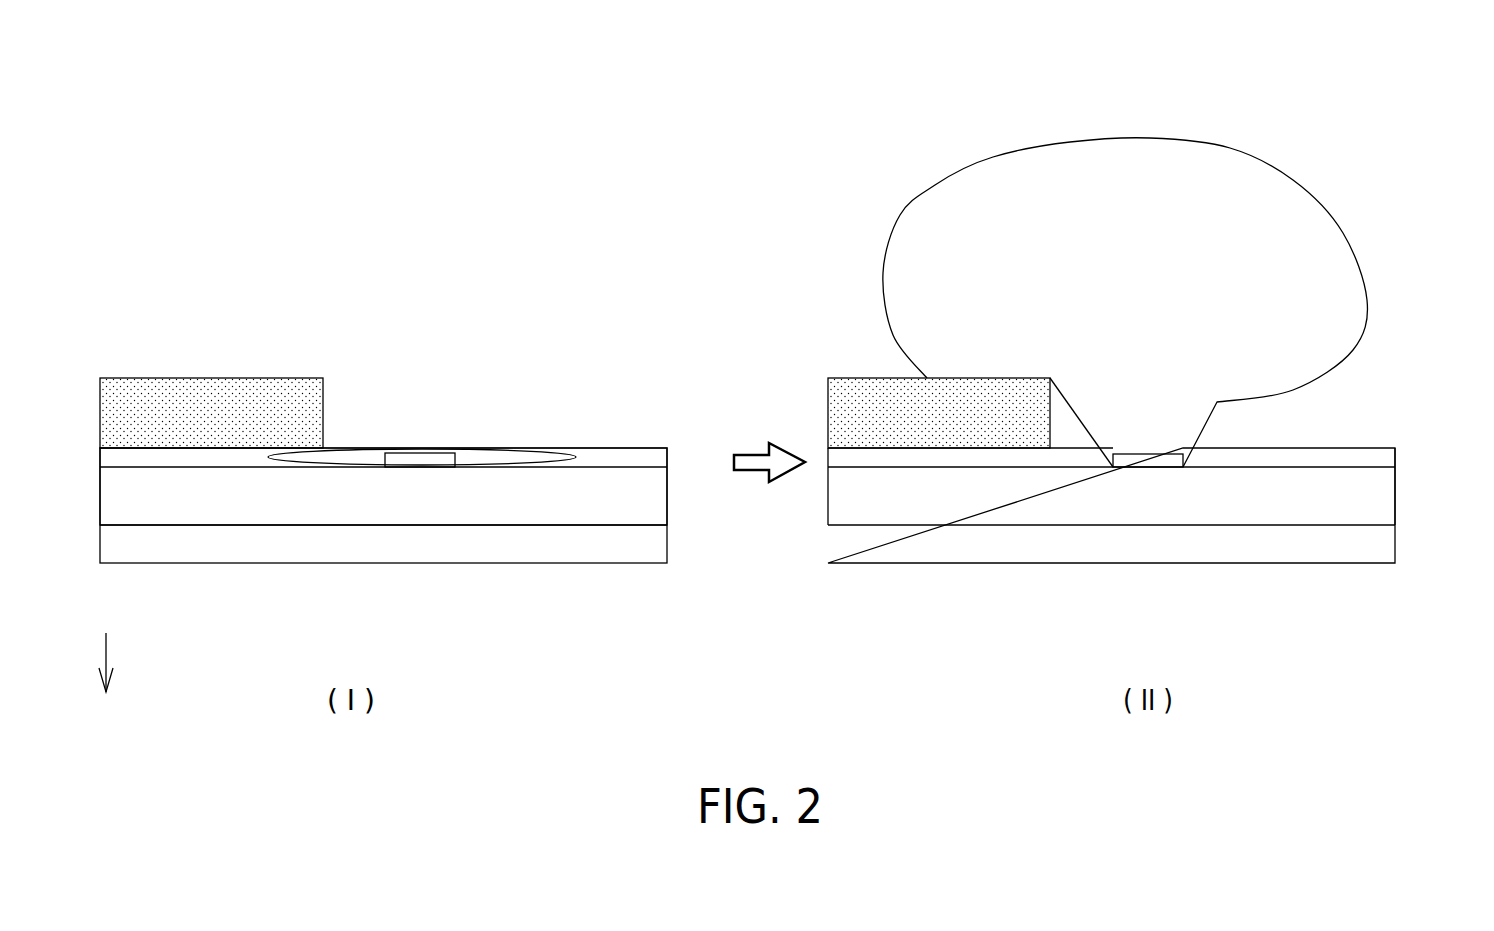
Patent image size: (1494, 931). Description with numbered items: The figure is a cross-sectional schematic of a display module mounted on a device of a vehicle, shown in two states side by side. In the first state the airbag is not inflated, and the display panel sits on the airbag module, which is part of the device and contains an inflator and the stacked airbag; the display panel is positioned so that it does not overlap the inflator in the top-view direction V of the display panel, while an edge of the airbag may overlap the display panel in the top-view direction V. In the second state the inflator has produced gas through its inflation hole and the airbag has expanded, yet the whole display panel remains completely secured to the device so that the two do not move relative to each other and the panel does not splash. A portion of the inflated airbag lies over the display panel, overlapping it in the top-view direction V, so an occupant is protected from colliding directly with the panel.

The top-view direction V is at (119, 662).